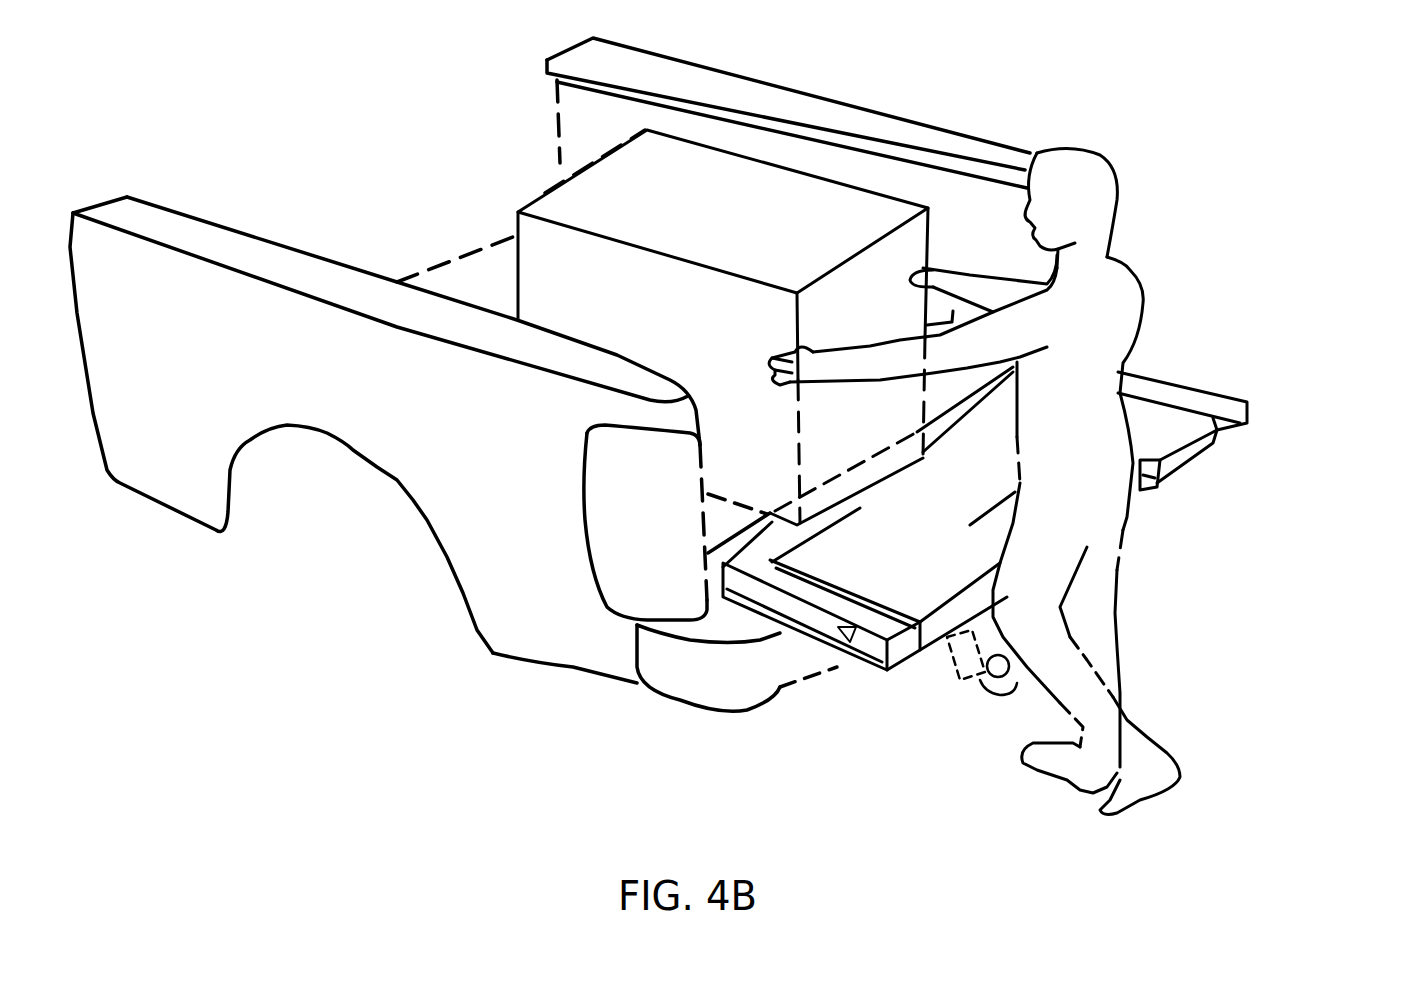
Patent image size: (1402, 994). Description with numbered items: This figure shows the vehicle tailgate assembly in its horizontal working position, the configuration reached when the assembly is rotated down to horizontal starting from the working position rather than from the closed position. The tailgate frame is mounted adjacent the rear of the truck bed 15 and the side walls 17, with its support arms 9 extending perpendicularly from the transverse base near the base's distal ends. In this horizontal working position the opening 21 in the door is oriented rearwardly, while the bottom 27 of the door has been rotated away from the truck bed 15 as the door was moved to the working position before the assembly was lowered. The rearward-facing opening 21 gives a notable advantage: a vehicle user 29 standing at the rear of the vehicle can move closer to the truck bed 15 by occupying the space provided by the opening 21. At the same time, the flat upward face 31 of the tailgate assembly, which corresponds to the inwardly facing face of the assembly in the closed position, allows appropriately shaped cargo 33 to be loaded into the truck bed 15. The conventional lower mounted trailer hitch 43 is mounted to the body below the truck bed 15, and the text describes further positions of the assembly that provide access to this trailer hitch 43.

The truck bed 15 is at (480, 290).
The side walls 17 is at (780, 143).
The cargo 33 is at (820, 213).
The vehicle user 29 is at (1143, 300).
The support arms 9 is at (1247, 402).
The bottom of the door 27 is at (1213, 457).
The opening 21 is at (1167, 483).
The flat upward face 31 is at (900, 573).
The trailer hitch 43 is at (977, 700).